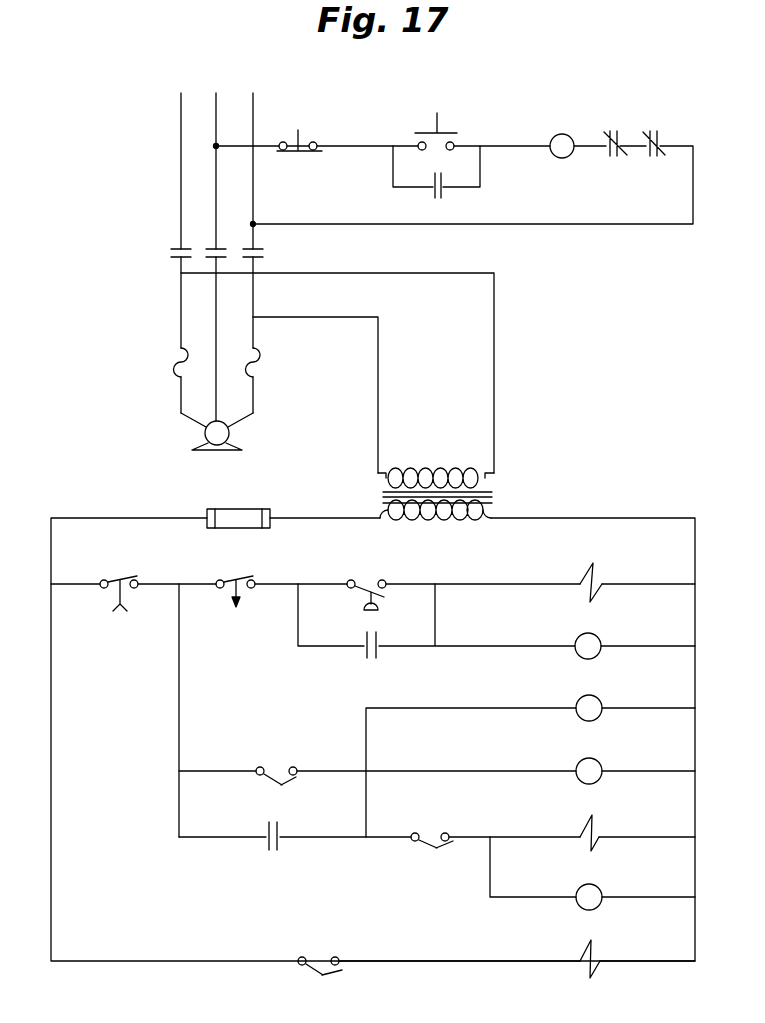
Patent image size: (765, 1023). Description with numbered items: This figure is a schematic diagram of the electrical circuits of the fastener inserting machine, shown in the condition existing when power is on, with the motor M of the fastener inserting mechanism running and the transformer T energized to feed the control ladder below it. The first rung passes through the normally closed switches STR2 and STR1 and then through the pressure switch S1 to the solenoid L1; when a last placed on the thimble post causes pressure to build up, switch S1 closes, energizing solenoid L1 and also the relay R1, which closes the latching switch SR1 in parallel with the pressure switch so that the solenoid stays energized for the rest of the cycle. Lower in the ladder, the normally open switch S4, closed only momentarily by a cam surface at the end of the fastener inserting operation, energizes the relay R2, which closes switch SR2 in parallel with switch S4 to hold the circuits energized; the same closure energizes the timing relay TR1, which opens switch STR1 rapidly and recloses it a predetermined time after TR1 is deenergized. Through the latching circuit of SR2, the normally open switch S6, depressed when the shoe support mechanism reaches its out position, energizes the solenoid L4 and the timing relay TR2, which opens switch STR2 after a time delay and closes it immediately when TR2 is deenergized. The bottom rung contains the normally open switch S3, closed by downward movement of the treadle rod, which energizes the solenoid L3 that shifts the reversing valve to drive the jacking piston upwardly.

The motor M is at (217, 446).
The transformer T is at (448, 494).
The switch STR-2 STR2 is at (124, 583).
The switch STR-1 STR1 is at (236, 581).
The pressure switch S-1 S1 is at (366, 583).
The switch SR-1 SR1 is at (374, 658).
The solenoid L-1 L1 is at (599, 578).
The relay R-1 R1 is at (602, 640).
The timing relay TR-1 TR1 is at (609, 700).
The relay R-2 R2 is at (603, 764).
The switch S-4 S4 is at (276, 764).
The switch SR-2 SR2 is at (272, 849).
The switch S-6 S6 is at (432, 829).
The solenoid L-4 L4 is at (600, 830).
The timing relay TR-2 TR2 is at (609, 892).
The switch S-3 S3 is at (320, 955).
The solenoid L-3 L3 is at (600, 956).